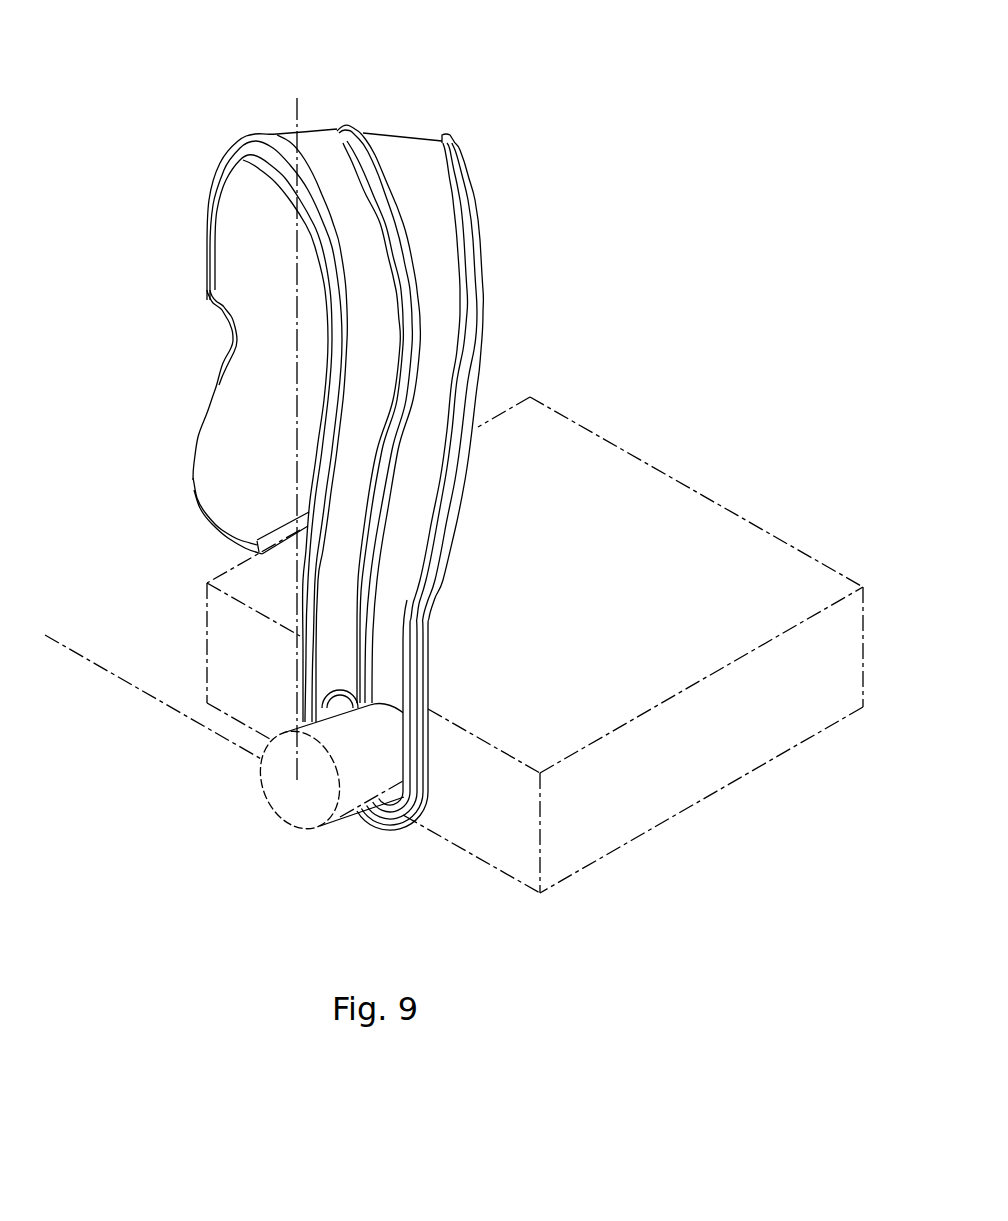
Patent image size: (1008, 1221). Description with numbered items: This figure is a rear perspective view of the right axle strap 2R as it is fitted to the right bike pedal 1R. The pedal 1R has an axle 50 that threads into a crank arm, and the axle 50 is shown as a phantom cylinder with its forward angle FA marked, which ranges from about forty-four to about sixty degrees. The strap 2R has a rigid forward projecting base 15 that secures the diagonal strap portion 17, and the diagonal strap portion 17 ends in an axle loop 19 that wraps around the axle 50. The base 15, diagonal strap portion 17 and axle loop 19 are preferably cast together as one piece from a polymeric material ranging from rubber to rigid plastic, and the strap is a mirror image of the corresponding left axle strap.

The right bike pedal 1R is at (647, 656).
The right axle strap 2R is at (482, 313).
The forward projecting base 15 is at (260, 452).
The diagonal strap portion 17 is at (383, 135).
The axle loop 19 is at (408, 820).
The axle 50 is at (323, 812).